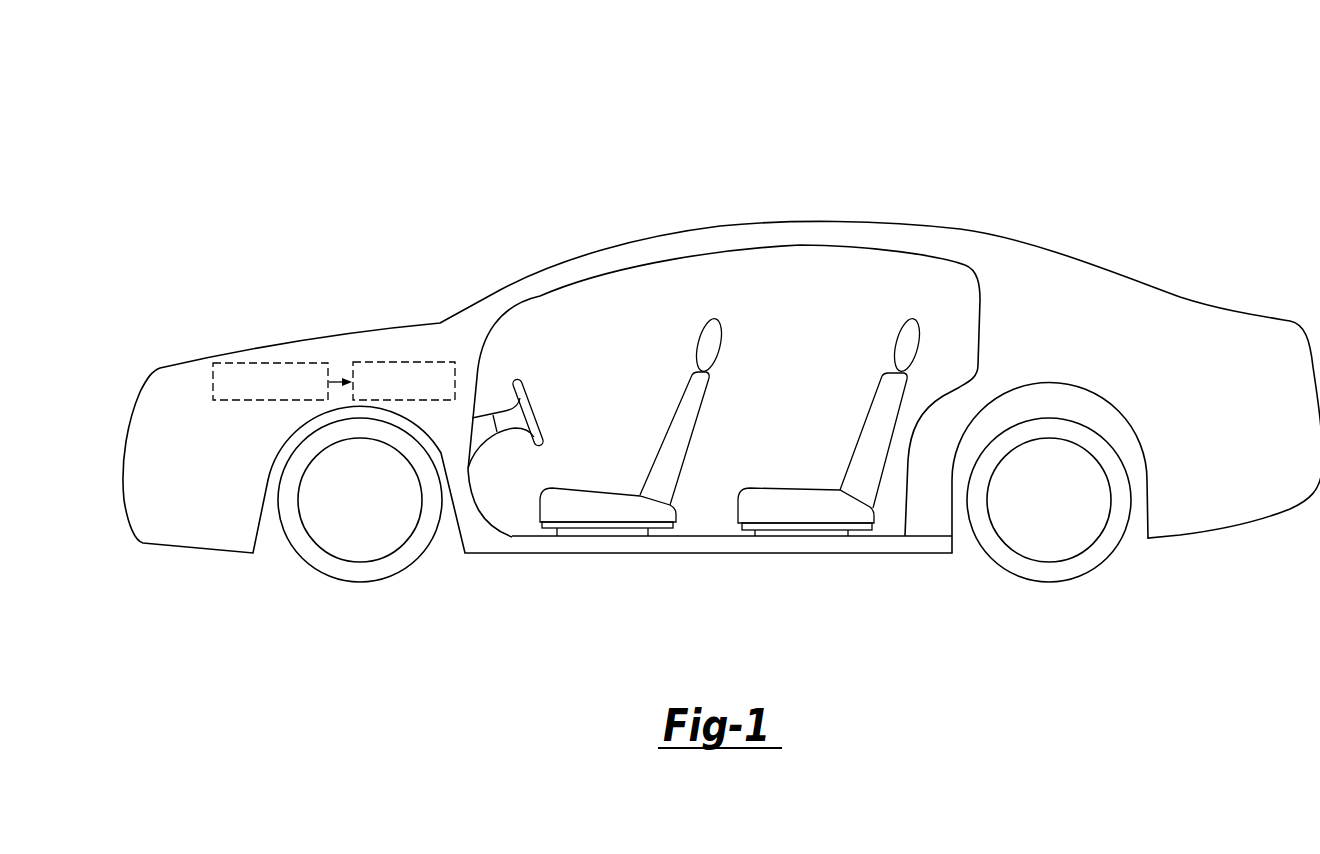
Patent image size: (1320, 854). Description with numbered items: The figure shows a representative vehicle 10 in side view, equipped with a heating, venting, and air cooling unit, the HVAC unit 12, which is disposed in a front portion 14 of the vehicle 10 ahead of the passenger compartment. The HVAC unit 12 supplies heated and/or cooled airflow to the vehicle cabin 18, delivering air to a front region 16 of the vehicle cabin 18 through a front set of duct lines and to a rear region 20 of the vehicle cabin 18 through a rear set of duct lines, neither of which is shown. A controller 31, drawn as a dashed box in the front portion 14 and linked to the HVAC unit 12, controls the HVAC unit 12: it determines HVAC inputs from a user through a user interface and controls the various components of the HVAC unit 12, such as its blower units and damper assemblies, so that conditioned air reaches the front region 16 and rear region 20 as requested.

The vehicle 10 is at (1072, 163).
The HVAC unit 12 is at (390, 360).
The front portion 14 is at (327, 350).
The front region 16 is at (647, 299).
The vehicle cabin 18 is at (818, 265).
The rear region 20 is at (877, 272).
The controller 31 is at (235, 402).